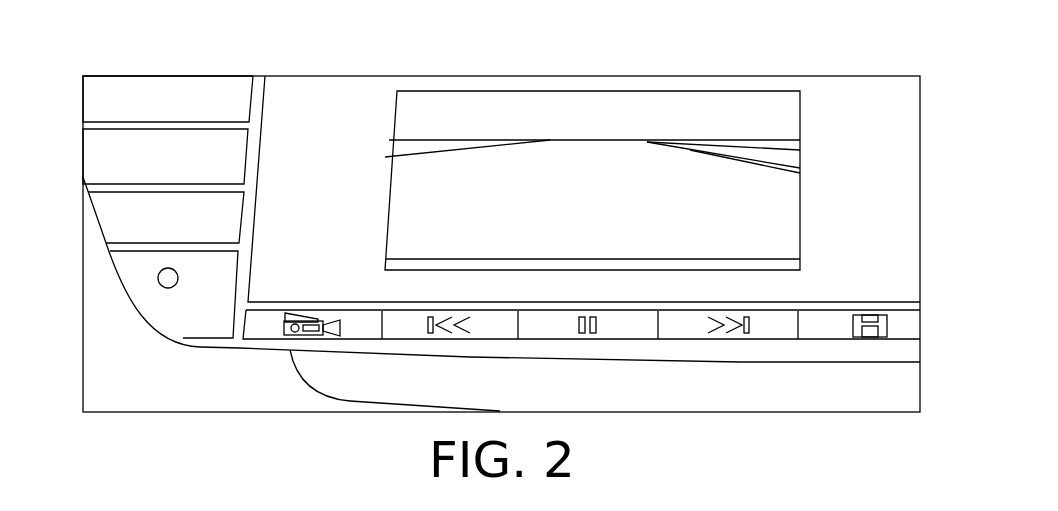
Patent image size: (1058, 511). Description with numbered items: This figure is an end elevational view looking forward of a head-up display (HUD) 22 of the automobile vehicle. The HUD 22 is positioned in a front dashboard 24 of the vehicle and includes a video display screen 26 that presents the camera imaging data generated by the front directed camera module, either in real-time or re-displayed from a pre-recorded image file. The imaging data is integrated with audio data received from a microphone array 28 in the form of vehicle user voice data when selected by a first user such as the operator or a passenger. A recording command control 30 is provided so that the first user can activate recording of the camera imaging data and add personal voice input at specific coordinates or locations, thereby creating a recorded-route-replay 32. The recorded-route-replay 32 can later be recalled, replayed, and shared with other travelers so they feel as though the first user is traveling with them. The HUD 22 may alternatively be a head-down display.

The head-up display (HUD) 22 is at (878, 98).
The front dashboard 24 is at (120, 306).
The video display screen 26 is at (737, 112).
The microphone array 28 is at (165, 277).
The recording command control 30 is at (312, 321).
The recorded-route-replay 32 is at (909, 331).